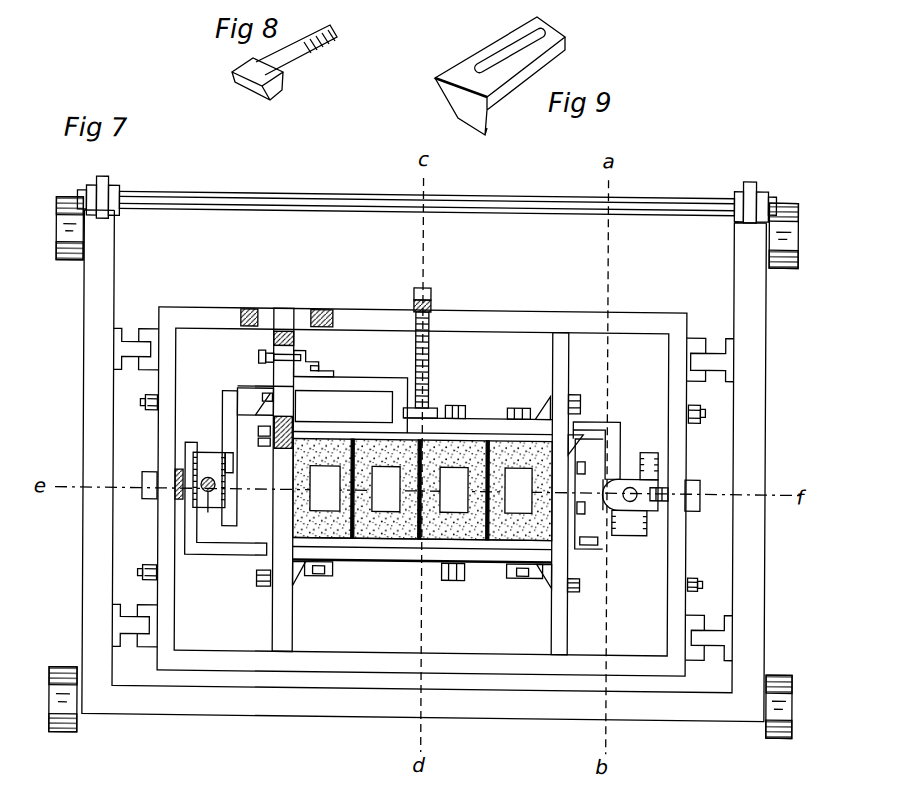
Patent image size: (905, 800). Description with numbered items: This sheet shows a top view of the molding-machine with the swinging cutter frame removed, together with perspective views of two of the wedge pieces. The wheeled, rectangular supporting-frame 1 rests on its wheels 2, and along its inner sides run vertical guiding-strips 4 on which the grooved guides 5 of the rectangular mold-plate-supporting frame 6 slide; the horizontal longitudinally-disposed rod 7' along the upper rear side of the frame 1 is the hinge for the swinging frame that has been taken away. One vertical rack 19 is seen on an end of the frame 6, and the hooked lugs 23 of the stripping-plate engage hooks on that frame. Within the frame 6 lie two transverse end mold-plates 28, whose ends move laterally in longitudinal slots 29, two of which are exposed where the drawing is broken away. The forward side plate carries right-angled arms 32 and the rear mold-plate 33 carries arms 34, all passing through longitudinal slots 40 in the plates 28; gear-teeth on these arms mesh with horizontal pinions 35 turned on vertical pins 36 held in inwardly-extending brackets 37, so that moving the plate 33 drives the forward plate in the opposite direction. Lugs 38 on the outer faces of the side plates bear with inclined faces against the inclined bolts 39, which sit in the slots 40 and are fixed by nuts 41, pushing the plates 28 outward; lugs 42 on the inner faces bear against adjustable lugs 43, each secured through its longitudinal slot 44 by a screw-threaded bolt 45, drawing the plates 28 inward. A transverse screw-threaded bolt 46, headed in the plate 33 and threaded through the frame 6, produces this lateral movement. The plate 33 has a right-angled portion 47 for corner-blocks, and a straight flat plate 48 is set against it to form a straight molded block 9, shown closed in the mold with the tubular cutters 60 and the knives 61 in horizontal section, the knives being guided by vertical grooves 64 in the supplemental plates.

In FIG. 7, the supporting-frame 1 is at (113, 266).
In FIG. 7, the wheels 2 is at (67, 264).
In FIG. 7, the vertical guiding-strips 4 is at (720, 357).
In FIG. 7, the grooved guides 5 is at (697, 336).
In FIG. 7, the mold-plate-supporting frame 6 is at (522, 322).
In FIG. 7, the horizontal longitudinally-disposed rod 7' is at (426, 194).
In FIG. 7, the molded block 9 is at (348, 440).
In FIG. 7, the vertical rack 19 is at (423, 479).
In FIG. 7, the hooked lugs 23 is at (150, 414).
In FIG. 7, the end mold-plates 28 is at (562, 340).
In FIG. 7, the longitudinal slots 29 is at (305, 312).
In FIG. 7, the right-angled arms 32 is at (693, 458).
In FIG. 7, the rear mold-plate 33 is at (485, 420).
In FIG. 7, the arms 34 is at (621, 442).
In FIG. 7, the horizontal pinions 35 is at (234, 470).
In FIG. 7, the vertical pins 36 is at (630, 485).
In FIG. 7, the inwardly-extending brackets 37 is at (201, 468).
In FIG. 7, the lugs 38 is at (334, 375).
In FIG. 8, the bolts 39 is at (300, 66).
In FIG. 7, the bolts 39 is at (303, 357).
In FIG. 7, the longitudinal slots 40 is at (262, 366).
In FIG. 7, the nuts 41 is at (268, 356).
In FIG. 7, the lugs 42 is at (245, 392).
In FIG. 9, the adjustable lugs 43 is at (446, 74).
In FIG. 7, the adjustable lugs 43 is at (258, 416).
In FIG. 9, the longitudinal slot 44 is at (498, 56).
In FIG. 7, the longitudinal slot 44 is at (603, 500).
In FIG. 7, the screw-threaded bolt 45 is at (275, 436).
In FIG. 7, the screw-threaded bolt 46 is at (430, 306).
In FIG. 7, the right-angled portion 47 is at (369, 428).
In FIG. 7, the straight flat plate 48 is at (440, 437).
In FIG. 7, the tubular cutters 60 is at (365, 446).
In FIG. 7, the cutting blades 61 is at (418, 538).
In FIG. 7, the vertical grooves 64 is at (486, 541).